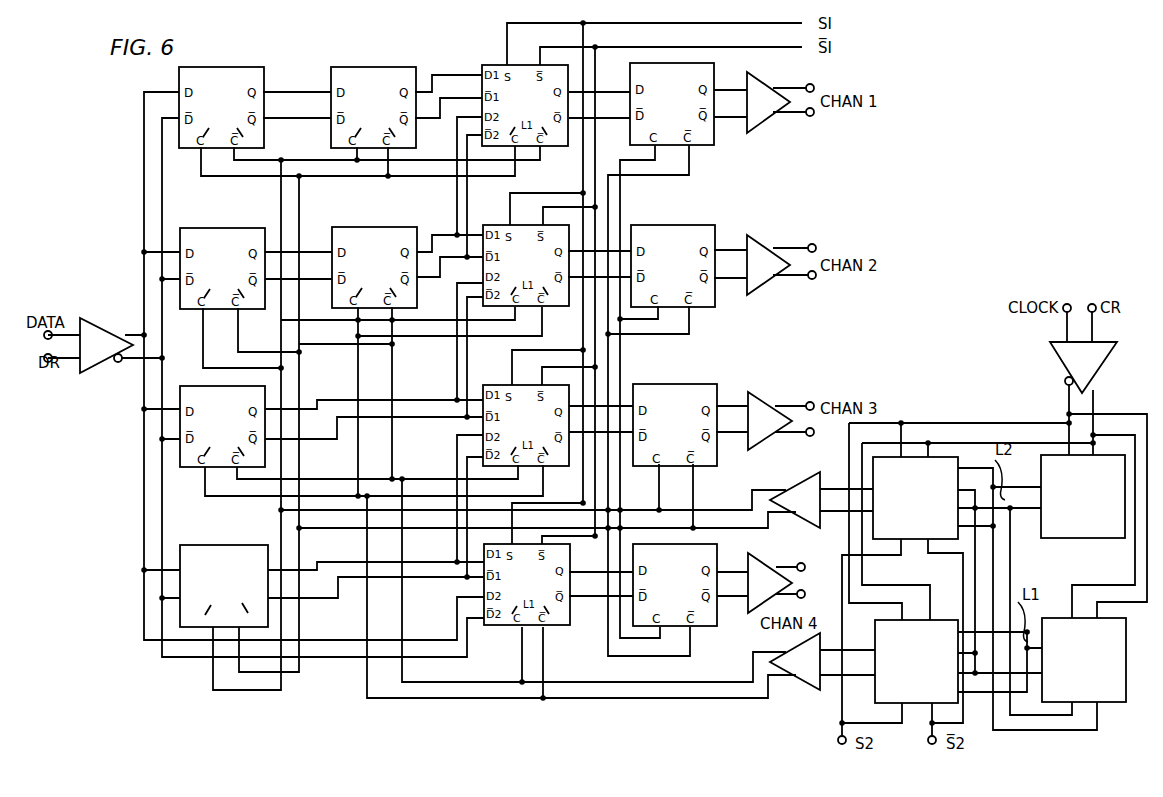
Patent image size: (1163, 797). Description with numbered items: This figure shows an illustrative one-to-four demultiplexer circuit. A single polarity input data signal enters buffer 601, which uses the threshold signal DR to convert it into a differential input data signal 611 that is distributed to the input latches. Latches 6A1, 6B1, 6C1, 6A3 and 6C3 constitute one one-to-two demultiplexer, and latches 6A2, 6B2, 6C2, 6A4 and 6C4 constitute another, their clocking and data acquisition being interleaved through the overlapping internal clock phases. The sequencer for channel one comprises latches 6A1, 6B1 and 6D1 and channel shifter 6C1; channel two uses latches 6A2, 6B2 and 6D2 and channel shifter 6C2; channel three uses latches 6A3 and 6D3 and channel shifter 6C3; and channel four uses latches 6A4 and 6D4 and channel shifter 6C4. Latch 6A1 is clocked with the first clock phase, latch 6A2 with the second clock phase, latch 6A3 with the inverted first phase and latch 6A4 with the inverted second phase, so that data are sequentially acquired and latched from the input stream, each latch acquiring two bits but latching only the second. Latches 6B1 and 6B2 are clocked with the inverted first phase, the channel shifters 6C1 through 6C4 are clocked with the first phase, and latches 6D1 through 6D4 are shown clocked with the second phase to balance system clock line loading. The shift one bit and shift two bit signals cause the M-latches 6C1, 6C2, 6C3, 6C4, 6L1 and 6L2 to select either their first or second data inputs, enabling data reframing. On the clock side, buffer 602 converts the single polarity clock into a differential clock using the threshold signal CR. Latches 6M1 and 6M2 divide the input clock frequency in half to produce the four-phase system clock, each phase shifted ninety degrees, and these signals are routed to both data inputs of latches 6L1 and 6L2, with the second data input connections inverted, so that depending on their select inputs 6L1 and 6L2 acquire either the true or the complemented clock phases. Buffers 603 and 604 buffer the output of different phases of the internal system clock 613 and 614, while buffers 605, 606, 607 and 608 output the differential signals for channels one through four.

The buffer 601 is at (92, 318).
The buffer 602 is at (1060, 358).
The buffer 603 is at (806, 486).
The buffer 604 is at (806, 686).
The buffer 605 is at (769, 90).
The buffer 606 is at (769, 248).
The buffer 607 is at (756, 402).
The buffer 608 is at (760, 565).
The differential input data signal 611 is at (120, 362).
The internal system clock phase 613 is at (828, 512).
The internal system clock phase 614 is at (828, 676).
The latch 6A1 is at (221, 107).
The latch 6A2 is at (222, 268).
The latch 6A3 is at (222, 426).
The latch 6A4 is at (224, 586).
The latch 6B1 is at (373, 107).
The latch 6B2 is at (374, 267).
The channel shifter 6C1 is at (525, 105).
The channel shifter 6C2 is at (526, 265).
The channel shifter 6C3 is at (526, 425).
The channel shifter 6C4 is at (527, 584).
The latch 6D1 is at (672, 104).
The latch 6D2 is at (673, 266).
The latch 6D3 is at (675, 425).
The latch 6D4 is at (675, 585).
The latch 6L1 is at (916, 661).
The latch 6L2 is at (915, 498).
The latch 6M1 is at (1084, 660).
The latch 6M2 is at (1083, 496).